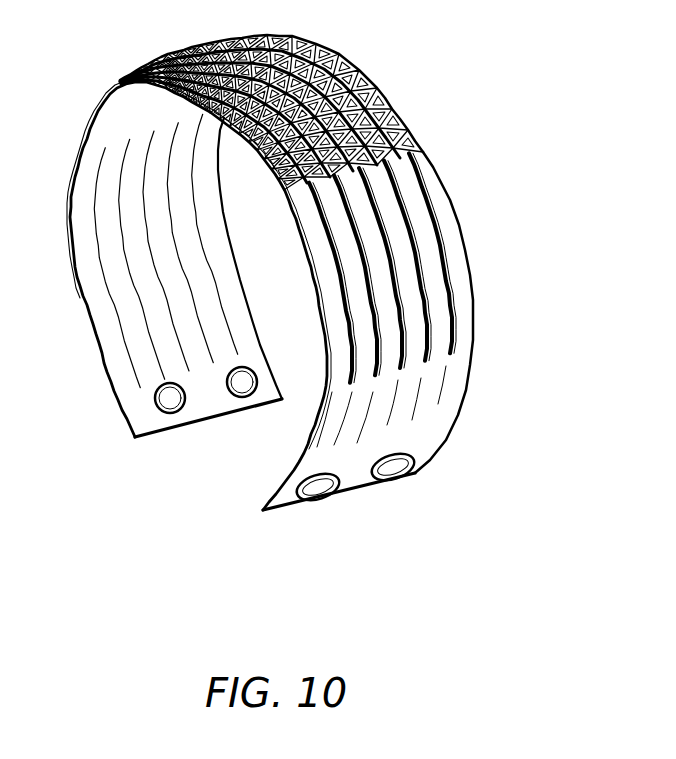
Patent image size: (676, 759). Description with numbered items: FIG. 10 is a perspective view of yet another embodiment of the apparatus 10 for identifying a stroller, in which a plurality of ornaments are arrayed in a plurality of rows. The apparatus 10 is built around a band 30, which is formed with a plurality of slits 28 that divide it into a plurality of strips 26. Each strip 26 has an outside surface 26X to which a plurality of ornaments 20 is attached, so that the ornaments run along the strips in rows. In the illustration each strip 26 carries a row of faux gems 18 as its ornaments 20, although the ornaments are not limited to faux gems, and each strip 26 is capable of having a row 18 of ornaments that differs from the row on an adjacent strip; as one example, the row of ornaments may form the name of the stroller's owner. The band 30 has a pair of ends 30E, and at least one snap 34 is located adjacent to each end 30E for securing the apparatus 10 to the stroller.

The apparatus 10 is at (306, 287).
The row of faux gems 18 is at (305, 45).
The ornaments 20 is at (358, 70).
The strips 26 is at (427, 165).
The outside surface 26X is at (327, 306).
The slits 28 is at (447, 268).
The band 30 is at (123, 368).
The ends 30E is at (233, 415).
The snap 34 is at (168, 405).